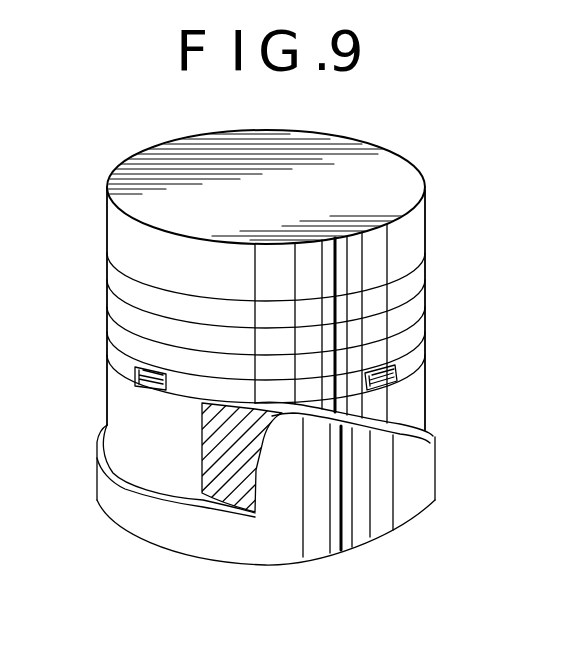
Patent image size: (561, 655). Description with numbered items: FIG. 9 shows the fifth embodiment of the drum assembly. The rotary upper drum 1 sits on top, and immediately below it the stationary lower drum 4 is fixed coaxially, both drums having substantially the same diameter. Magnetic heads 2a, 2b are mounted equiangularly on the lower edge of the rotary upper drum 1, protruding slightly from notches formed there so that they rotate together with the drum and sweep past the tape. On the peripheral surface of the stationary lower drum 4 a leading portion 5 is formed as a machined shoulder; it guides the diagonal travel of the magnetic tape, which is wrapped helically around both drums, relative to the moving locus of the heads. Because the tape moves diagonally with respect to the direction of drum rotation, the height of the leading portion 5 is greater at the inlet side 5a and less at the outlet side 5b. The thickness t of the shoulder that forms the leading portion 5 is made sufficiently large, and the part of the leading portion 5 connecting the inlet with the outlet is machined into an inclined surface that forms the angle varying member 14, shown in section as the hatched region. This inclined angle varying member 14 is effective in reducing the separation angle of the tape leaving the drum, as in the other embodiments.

The rotary upper drum 1 is at (402, 180).
The stationary lower drum 4 is at (418, 380).
The magnetic head 2a is at (143, 381).
The magnetic head 2b is at (397, 386).
The leading portion 5 is at (152, 518).
The inlet side 5a is at (385, 433).
The outlet side 5b is at (187, 508).
The angle varying member 14 is at (232, 470).
The thickness of the shoulder t is at (180, 463).